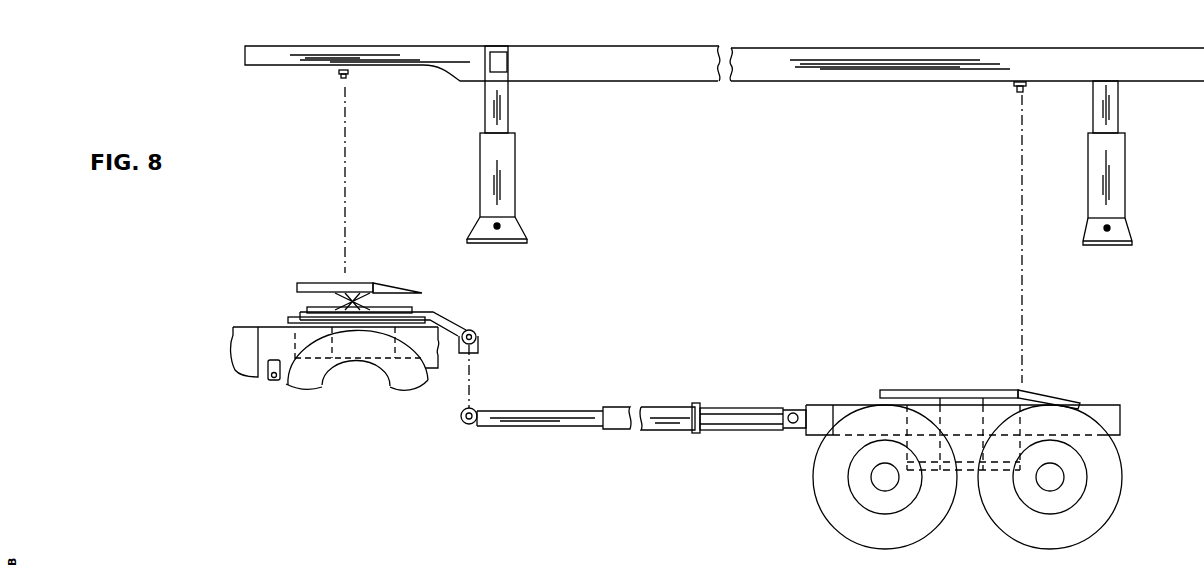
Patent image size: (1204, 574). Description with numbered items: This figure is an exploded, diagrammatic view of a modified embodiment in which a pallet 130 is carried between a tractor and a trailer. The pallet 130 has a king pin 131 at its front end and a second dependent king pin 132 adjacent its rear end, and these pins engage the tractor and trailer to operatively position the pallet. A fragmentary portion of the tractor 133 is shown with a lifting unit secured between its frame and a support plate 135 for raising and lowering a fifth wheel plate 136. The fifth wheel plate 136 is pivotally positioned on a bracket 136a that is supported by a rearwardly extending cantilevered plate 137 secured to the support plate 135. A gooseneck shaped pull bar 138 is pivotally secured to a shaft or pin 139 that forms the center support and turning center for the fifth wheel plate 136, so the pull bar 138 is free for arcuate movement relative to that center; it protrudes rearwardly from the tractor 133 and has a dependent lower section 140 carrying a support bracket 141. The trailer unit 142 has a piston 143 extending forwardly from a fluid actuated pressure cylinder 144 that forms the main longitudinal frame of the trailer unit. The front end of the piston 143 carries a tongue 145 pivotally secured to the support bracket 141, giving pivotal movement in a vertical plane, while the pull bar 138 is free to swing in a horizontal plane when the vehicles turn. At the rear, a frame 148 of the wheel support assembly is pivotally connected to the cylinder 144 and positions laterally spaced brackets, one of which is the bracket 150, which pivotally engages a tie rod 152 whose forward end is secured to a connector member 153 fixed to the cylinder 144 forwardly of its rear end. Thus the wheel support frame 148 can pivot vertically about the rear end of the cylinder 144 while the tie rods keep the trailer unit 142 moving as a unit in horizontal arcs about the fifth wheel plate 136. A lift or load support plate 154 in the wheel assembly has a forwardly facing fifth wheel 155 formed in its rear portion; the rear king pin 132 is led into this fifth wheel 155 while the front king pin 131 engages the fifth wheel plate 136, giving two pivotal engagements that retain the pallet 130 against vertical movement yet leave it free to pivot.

The pallet 130 is at (828, 44).
The king pin 131 is at (337, 73).
The second dependent king pin 132 is at (1013, 89).
The tractor 133 is at (252, 274).
The support plate 135 is at (292, 320).
The fifth wheel plate 136 is at (314, 282).
The bracket 136a is at (360, 294).
The cantilevered plate 137 is at (306, 310).
The gooseneck shaped pull bar 138 is at (418, 313).
The shaft or pin 139 is at (386, 288).
The dependent end or lower section 140 is at (463, 350).
The support bracket 141 is at (478, 338).
The trailer unit 142 is at (745, 383).
The piston 143 is at (566, 410).
The fluid actuated pressure cylinder 144 is at (660, 407).
The tongue 145 is at (470, 425).
The frame 148 is at (856, 398).
The bracket 150 is at (791, 408).
The tie rod 152 is at (744, 430).
The connector member 153 is at (696, 433).
The load support plate 154 is at (914, 390).
The fifth wheel 155 is at (1058, 394).